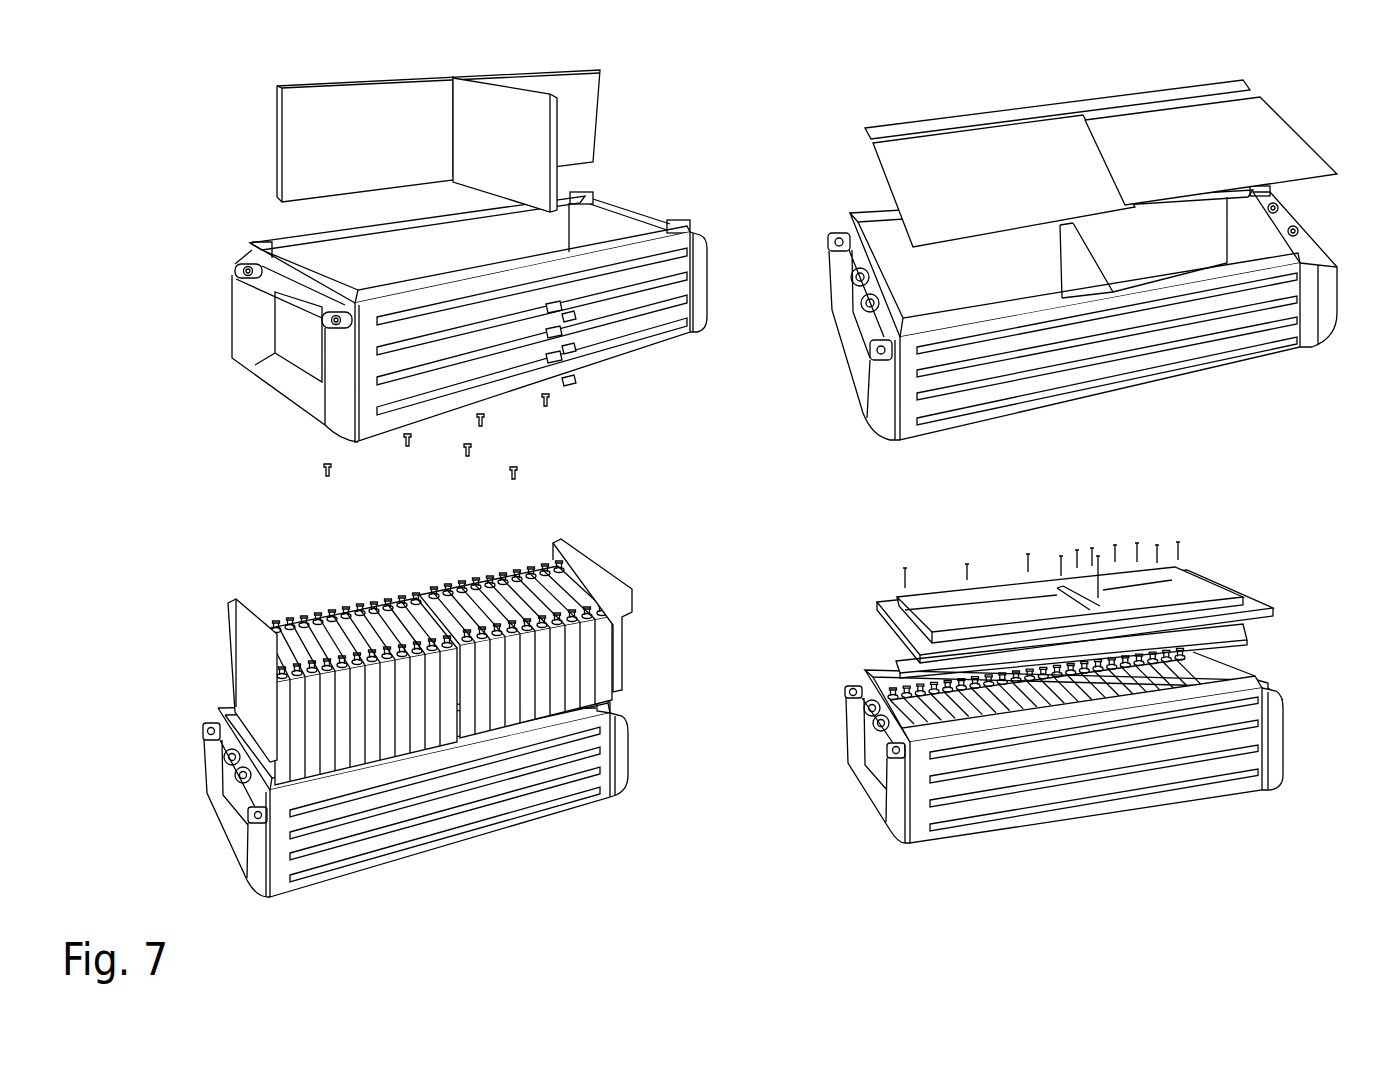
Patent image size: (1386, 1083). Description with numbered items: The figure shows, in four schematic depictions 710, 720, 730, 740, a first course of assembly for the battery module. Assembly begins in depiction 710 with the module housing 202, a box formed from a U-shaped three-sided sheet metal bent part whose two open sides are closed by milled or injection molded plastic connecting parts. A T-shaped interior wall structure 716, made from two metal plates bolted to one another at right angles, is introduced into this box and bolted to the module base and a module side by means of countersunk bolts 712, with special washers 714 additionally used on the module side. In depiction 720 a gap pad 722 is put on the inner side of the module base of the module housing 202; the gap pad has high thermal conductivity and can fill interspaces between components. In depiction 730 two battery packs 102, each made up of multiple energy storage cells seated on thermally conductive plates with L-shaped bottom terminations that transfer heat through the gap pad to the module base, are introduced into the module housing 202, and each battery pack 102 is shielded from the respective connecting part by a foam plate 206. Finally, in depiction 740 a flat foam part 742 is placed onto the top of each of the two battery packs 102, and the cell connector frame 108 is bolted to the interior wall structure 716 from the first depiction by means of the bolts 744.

The depiction 710 is at (212, 158).
The T-shaped interior wall structure 716 is at (576, 133).
The special washers 714 is at (546, 356).
The countersunk bolts 712 is at (335, 471).
The module housing 202 is at (641, 309).
The depiction 720 is at (838, 157).
The gap pad 722 is at (1017, 158).
The depiction 730 is at (203, 591).
The foam plate 206 is at (250, 662).
The battery packs 102 is at (494, 617).
The depiction 740 is at (840, 638).
The bolts 744 is at (907, 564).
The cell connector frame 108 is at (1202, 585).
The flat foam part 742 is at (1208, 632).